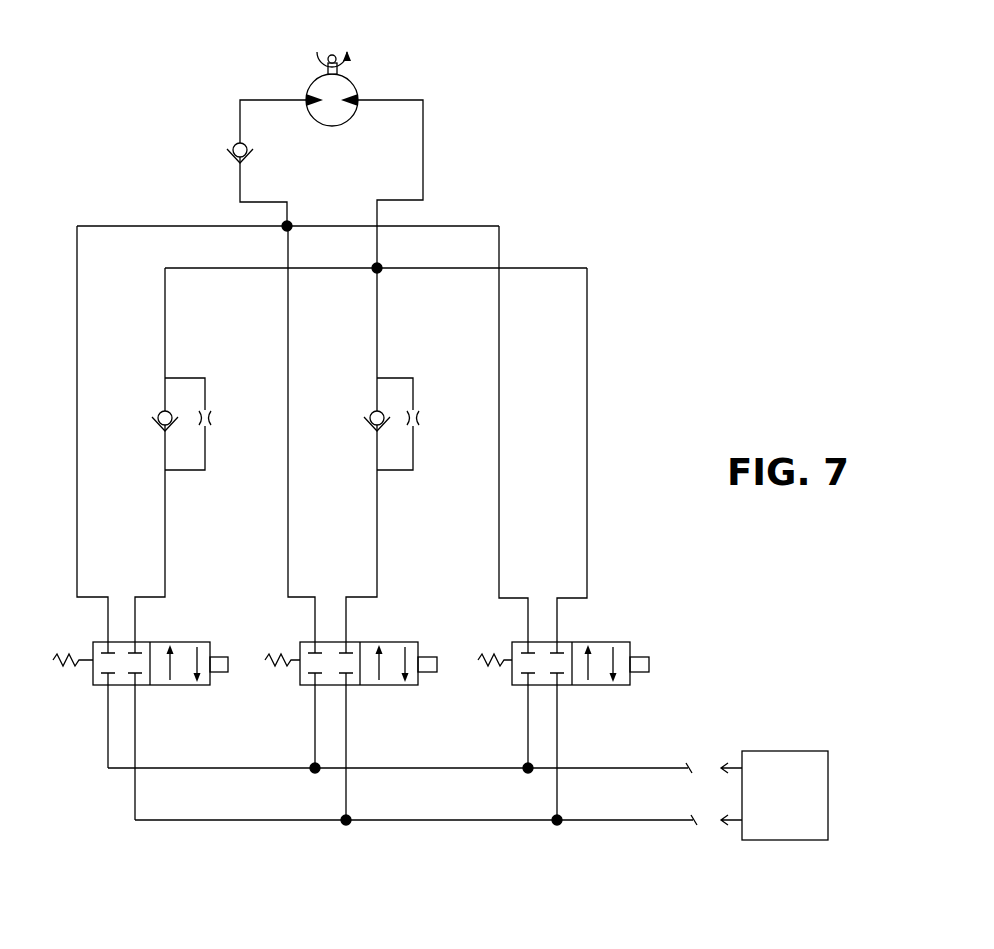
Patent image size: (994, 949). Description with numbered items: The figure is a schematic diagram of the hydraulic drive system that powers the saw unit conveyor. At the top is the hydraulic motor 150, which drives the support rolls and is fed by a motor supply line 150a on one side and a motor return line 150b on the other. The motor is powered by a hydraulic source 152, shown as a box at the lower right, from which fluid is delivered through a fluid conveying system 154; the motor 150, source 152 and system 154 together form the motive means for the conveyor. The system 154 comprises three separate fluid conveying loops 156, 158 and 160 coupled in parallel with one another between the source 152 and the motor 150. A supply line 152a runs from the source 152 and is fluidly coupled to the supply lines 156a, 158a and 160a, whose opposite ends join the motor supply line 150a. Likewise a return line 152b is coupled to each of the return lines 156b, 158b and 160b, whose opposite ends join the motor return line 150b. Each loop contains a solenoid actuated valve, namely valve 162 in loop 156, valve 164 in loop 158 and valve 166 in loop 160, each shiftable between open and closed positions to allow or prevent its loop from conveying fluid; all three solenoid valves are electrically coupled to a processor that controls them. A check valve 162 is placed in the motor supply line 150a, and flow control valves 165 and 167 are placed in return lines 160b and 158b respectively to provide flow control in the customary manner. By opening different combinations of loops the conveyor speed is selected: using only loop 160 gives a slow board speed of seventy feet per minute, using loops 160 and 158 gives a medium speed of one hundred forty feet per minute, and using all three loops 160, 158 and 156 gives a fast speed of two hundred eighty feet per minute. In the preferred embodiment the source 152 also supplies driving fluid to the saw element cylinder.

The hydraulic motor 150 is at (340, 85).
The motor supply line 150a is at (240, 193).
The motor return line 150b is at (423, 147).
The hydraulic source 152 is at (797, 800).
The supply line 152a is at (613, 768).
The return line 152b is at (580, 822).
The fluid conveying system 154 is at (651, 329).
The fluid conveying loop 156 is at (555, 427).
The supply line 156a is at (498, 527).
The return line 156b is at (587, 428).
The fluid conveying loop 158 is at (336, 427).
The supply line 158a is at (288, 527).
The return line 158b is at (377, 527).
The fluid conveying loop 160 is at (118, 427).
The supply line 160a is at (77, 515).
The return line 160b is at (165, 527).
The solenoid actuated valve 162 is at (235, 147).
The solenoid actuated valve 164 is at (389, 639).
The flow control valve 165 is at (208, 377).
The solenoid actuated valve 166 is at (180, 639).
The flow control valve 167 is at (415, 377).